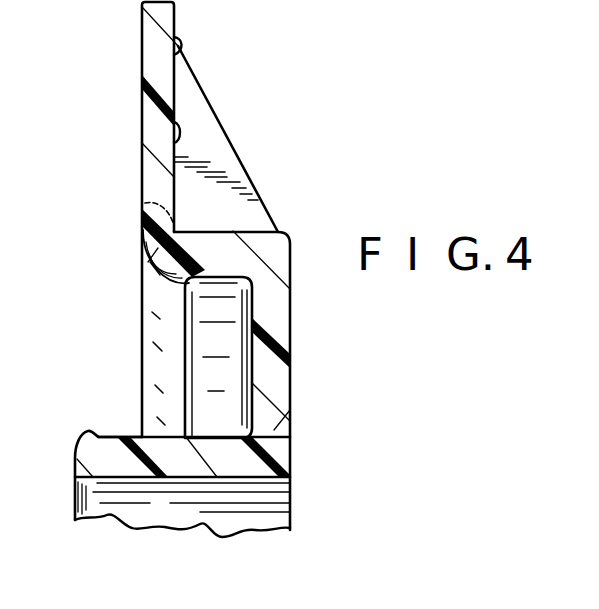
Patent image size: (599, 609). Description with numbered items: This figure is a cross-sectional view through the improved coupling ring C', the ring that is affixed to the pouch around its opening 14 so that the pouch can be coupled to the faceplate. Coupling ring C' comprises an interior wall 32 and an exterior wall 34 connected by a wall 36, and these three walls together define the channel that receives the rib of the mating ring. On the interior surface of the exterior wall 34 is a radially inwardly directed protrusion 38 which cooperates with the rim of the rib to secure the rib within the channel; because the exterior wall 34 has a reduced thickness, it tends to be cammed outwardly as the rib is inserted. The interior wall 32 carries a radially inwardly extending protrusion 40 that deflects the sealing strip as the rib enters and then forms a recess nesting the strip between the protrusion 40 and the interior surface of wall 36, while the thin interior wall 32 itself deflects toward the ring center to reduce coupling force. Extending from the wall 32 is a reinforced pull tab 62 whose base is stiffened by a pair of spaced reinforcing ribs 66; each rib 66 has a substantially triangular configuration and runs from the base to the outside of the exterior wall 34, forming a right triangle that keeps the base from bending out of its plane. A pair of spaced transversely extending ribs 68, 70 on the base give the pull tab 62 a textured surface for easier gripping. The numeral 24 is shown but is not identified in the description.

The opening 14 is at (257, 527).
The housing 24 is at (474, 0).
The interior wall 32 is at (172, 462).
The exterior wall 34 is at (220, 250).
The wall 36 is at (293, 408).
The protrusion 38 is at (173, 268).
The protrusion 40 is at (90, 431).
The reinforced pull tab 62 is at (158, 14).
The reinforcing ribs 66 is at (212, 165).
The transversely extending rib 68 is at (182, 44).
The transversely extending rib 70 is at (181, 127).
The coupling ring C' is at (324, 331).